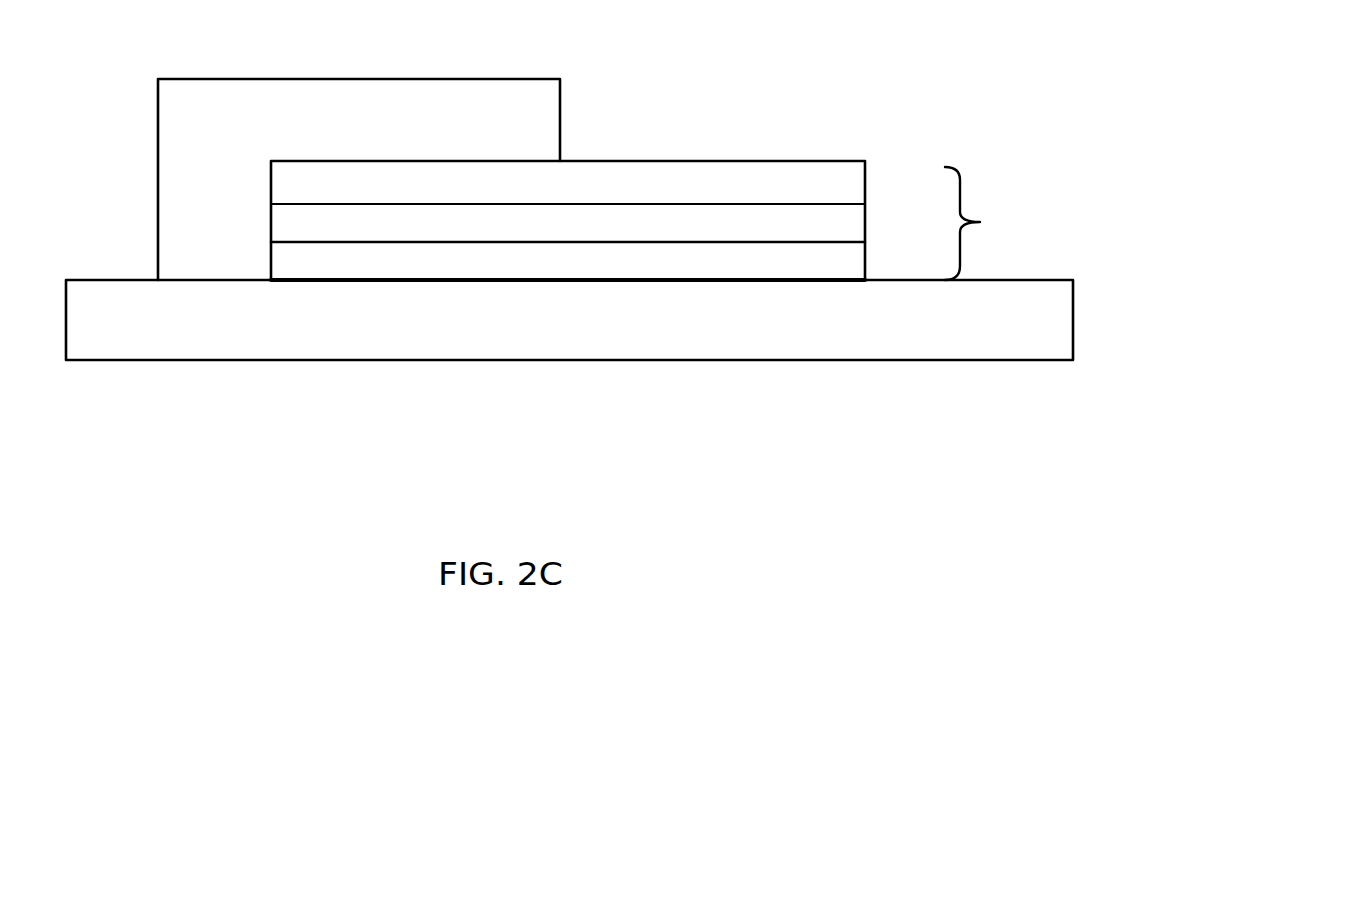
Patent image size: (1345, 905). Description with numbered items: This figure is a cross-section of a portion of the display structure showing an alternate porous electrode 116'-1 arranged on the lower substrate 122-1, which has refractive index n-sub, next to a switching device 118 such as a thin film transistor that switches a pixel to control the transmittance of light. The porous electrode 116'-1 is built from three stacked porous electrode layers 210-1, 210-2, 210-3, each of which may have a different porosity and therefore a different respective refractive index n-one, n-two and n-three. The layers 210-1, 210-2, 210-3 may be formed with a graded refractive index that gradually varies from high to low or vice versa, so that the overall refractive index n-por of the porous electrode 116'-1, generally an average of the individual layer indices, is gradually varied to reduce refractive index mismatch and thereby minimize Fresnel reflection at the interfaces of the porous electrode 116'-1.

The switching device 118 is at (243, 148).
The porous electrode 116'-1 is at (684, 140).
The porous electrode layer 210-1 is at (698, 253).
The porous electrode layer 210-2 is at (638, 217).
The porous electrode layer 210-3 is at (610, 175).
The lower substrate 122-1 is at (1063, 343).